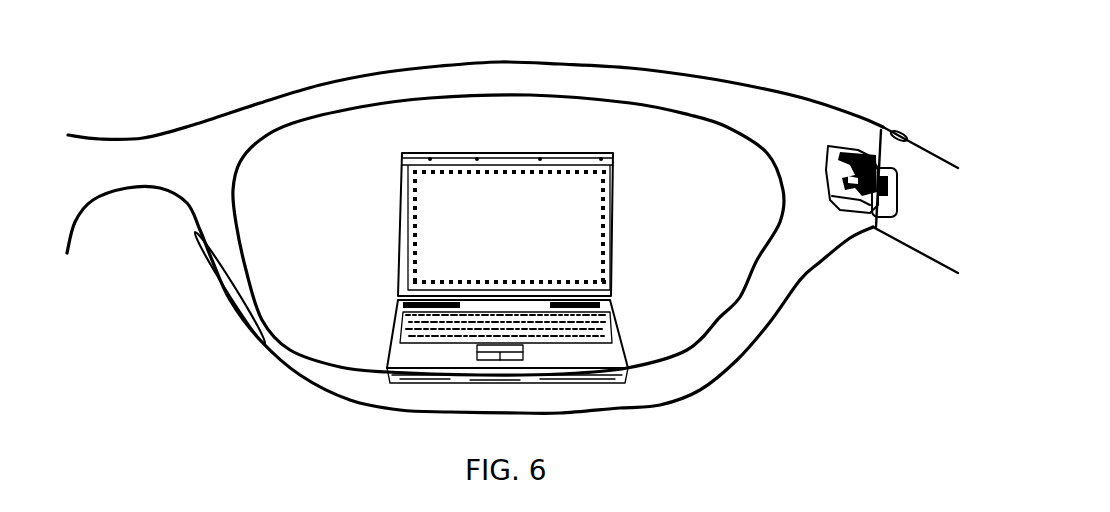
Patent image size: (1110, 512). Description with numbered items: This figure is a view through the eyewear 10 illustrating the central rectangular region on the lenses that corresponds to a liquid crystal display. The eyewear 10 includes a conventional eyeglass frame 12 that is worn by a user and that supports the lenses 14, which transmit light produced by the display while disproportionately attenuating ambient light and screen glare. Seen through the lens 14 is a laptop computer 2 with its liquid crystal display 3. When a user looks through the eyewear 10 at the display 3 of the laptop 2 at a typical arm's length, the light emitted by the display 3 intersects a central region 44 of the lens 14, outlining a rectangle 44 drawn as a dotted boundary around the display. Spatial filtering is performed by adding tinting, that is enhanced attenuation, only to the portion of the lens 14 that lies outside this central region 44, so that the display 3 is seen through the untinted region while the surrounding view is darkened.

The eyewear 10 is at (275, 100).
The lenses 14 is at (690, 202).
The eyeglass frame 12 is at (805, 140).
The laptop computer 2 is at (585, 152).
The liquid crystal display 3 is at (507, 212).
The central region 44 is at (447, 165).